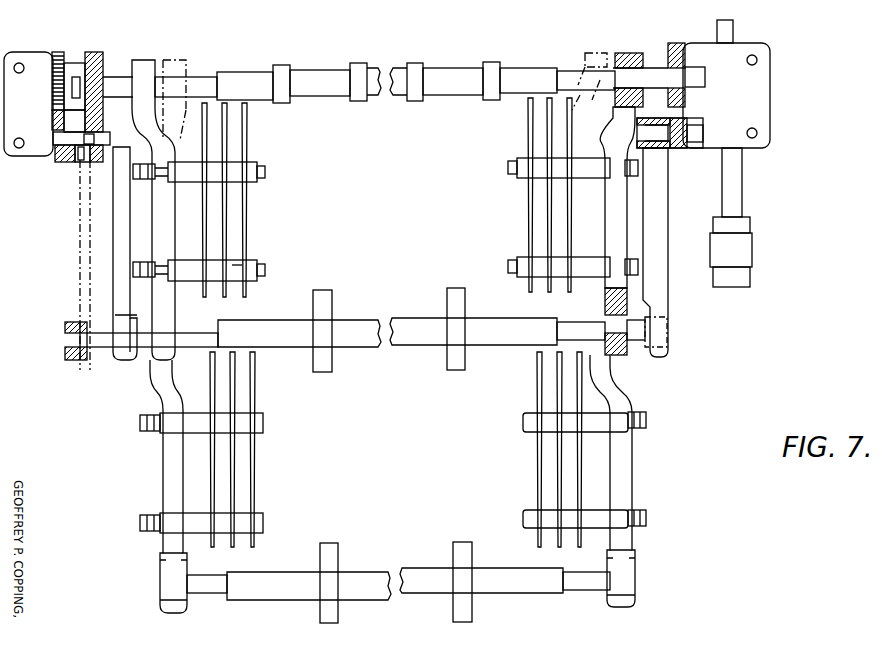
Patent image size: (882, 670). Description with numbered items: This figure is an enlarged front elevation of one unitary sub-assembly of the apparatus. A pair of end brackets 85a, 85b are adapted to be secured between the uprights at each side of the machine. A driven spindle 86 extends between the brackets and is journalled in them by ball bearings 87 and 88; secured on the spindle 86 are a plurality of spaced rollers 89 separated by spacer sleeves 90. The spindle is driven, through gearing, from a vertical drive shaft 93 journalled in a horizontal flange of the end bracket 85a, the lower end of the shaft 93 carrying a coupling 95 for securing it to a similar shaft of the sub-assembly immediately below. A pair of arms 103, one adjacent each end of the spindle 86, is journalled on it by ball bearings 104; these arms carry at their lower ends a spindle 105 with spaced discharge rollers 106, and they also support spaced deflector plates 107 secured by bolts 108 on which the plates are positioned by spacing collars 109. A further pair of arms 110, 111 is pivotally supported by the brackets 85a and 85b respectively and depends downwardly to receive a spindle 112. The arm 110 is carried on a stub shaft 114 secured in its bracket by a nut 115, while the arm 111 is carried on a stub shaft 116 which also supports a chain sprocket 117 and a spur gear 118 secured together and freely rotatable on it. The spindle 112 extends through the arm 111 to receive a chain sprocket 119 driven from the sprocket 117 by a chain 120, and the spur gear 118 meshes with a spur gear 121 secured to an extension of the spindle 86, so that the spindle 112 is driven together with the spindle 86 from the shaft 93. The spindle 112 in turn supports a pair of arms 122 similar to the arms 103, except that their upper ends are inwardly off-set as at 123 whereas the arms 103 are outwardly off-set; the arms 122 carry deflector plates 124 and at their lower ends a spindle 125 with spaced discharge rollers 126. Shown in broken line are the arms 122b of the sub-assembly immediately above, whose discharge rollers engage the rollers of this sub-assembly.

The end bracket 85a is at (742, 58).
The end bracket 85b is at (37, 58).
The driven spindle 86 is at (562, 72).
The ball bearing 87 is at (678, 47).
The ball bearing 88 is at (95, 57).
The rollers 89 is at (272, 68).
The spacer sleeves 90 is at (333, 73).
The vertical drive shaft 93 is at (733, 180).
The coupling 95 is at (733, 247).
The arms 103 is at (157, 235).
The ball bearings 104 is at (638, 55).
The spindle 105 is at (578, 330).
The discharge rollers 106 is at (325, 355).
The deflector plates 107 is at (246, 232).
The bolts 108 is at (262, 172).
The spacing collars 109 is at (237, 270).
The arm 110 is at (650, 207).
The arm 111 is at (120, 290).
The spindle 112 is at (655, 333).
The stub shaft 114 is at (660, 148).
The nut 115 is at (700, 122).
The stub shaft 116 is at (95, 153).
The chain sprocket 117 is at (75, 165).
The spur gear 118 is at (60, 163).
The chain sprocket 119 is at (80, 362).
The chain 120 is at (82, 275).
The spur gear 121 is at (58, 93).
The arms 122 is at (165, 488).
The arms of the sub-assembly immediately above 122b is at (188, 62).
The inward off-set 123 is at (168, 385).
The deflector plates 124 is at (212, 460).
The spindle 125 is at (577, 580).
The discharge rollers 126 is at (326, 550).